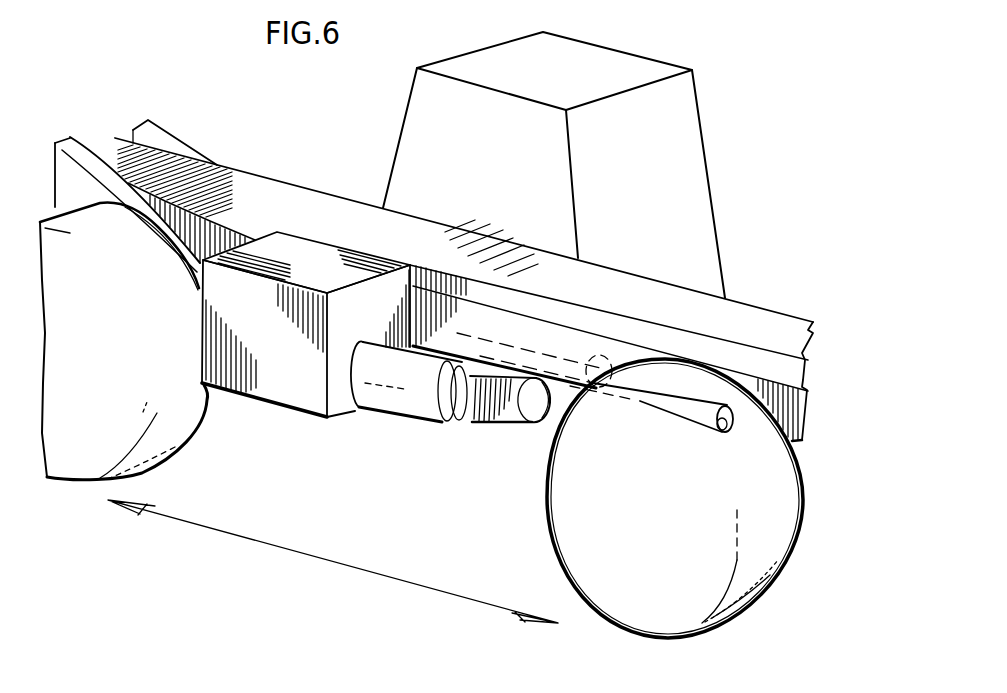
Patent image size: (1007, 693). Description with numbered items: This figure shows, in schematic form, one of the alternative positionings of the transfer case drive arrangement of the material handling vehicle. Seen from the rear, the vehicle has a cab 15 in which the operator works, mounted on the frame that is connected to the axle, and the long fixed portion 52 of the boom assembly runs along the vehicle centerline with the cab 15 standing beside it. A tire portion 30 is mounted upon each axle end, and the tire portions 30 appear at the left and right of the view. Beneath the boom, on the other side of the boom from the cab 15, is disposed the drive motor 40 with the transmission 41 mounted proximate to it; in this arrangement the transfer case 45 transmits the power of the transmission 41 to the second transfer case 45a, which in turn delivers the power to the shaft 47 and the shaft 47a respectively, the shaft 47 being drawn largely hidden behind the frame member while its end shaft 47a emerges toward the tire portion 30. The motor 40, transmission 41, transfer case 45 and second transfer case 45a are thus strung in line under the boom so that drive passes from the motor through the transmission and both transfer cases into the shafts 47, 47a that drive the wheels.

The cab 15 is at (673, 163).
The fixed portion 52 is at (730, 320).
The motor 40 is at (277, 375).
The transmission 41 is at (380, 392).
The transfer case 45 is at (510, 410).
The second transfer case 45a is at (553, 422).
The shaft 47 is at (510, 348).
The shaft 47a is at (665, 405).
The tire portion 30 is at (768, 588).